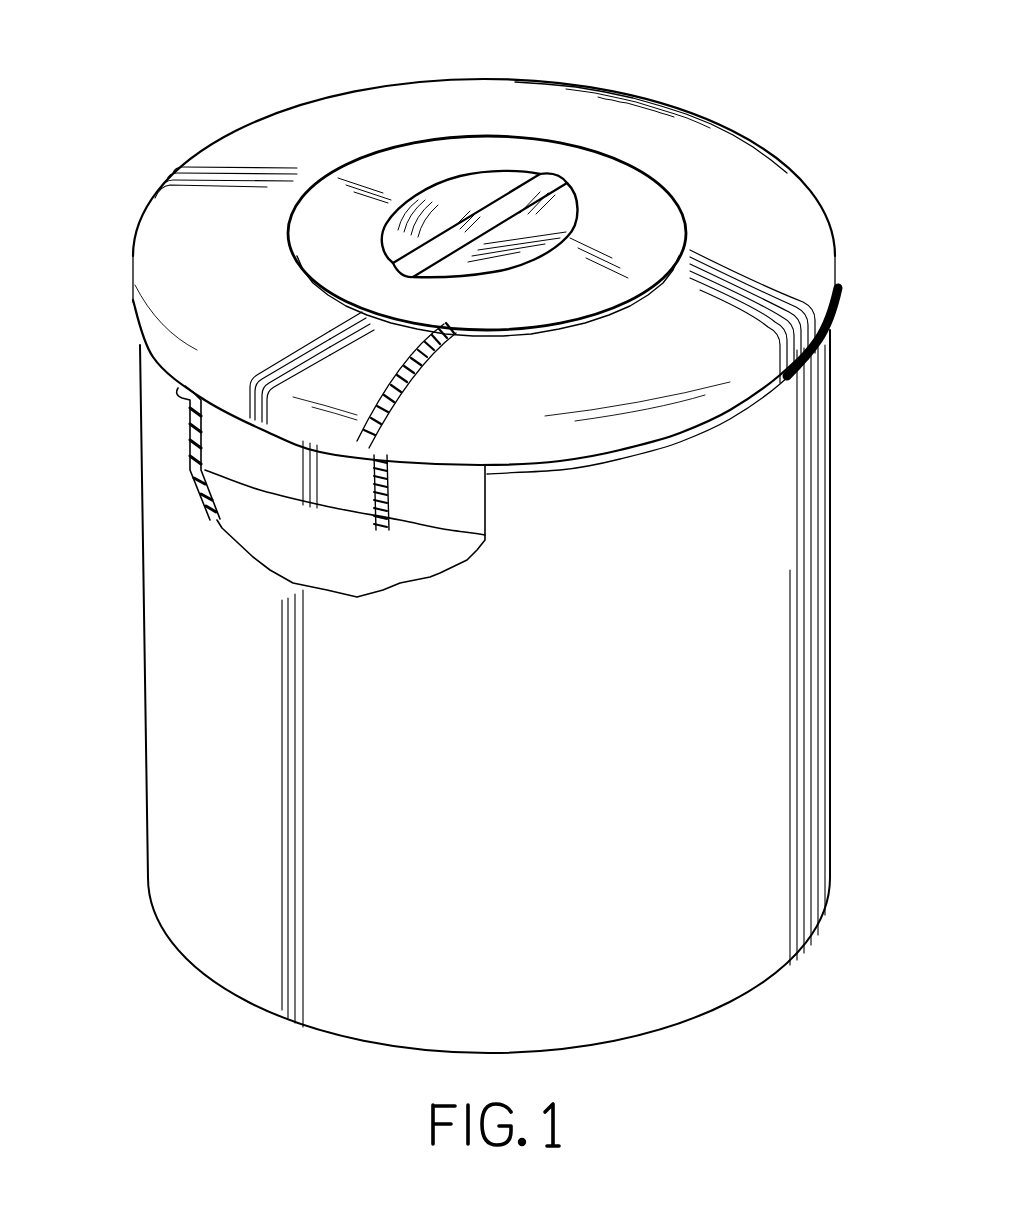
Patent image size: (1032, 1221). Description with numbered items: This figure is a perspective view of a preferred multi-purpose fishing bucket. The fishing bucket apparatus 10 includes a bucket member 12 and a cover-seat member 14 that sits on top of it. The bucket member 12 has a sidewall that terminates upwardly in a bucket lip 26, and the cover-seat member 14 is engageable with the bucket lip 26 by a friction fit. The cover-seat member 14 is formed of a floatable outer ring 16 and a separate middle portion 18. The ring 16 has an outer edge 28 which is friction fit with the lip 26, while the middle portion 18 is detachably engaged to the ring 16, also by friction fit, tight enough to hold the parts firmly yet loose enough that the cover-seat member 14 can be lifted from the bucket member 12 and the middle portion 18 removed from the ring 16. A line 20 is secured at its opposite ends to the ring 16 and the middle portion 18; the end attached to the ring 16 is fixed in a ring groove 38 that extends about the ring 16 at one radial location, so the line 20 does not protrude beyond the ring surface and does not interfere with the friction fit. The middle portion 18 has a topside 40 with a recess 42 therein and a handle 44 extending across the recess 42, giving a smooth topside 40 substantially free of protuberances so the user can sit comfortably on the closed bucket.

The fishing bucket apparatus 10 is at (128, 799).
The bucket member 12 is at (733, 664).
The cover-seat member 14 is at (526, 267).
The floatable outer ring 16 is at (743, 200).
The middle portion 18 is at (627, 213).
The line 20 is at (413, 377).
The bucket lip 26 is at (178, 394).
The outer edge 28 is at (260, 462).
The ring groove 38 is at (405, 350).
The topside 40 is at (550, 298).
The recess 42 is at (460, 193).
The handle 44 is at (523, 192).